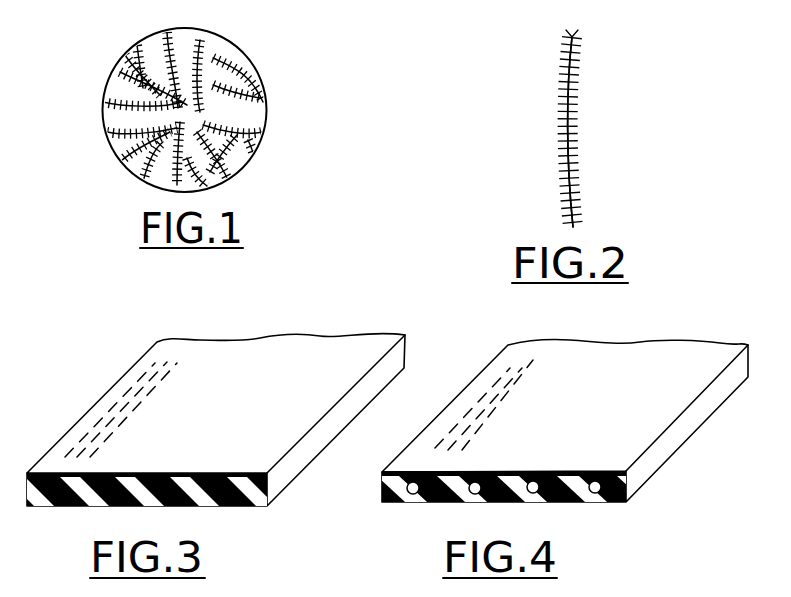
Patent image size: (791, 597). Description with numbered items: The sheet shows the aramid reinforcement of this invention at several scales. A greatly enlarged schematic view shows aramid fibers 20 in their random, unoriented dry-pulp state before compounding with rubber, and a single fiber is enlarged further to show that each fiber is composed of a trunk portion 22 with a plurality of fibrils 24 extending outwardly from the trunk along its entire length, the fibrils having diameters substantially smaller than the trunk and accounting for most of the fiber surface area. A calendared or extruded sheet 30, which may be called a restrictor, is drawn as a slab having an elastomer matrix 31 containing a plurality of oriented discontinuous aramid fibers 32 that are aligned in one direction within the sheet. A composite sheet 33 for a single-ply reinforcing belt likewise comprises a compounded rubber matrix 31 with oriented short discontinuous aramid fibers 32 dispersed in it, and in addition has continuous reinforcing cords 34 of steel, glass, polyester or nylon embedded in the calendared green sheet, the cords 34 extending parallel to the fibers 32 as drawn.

In FIG. 1, the aramid fibers 20 is at (213, 60).
In FIG. 2, the aramid fibers 20 is at (581, 113).
In FIG. 2, the trunk portion 22 is at (563, 40).
In FIG. 2, the fibrils 24 is at (575, 122).
In FIG. 3, the calendared or extruded sheet 30 is at (234, 384).
In FIG. 3, the elastomer matrix 31 is at (388, 368).
In FIG. 4, the elastomer matrix 31 is at (668, 450).
In FIG. 3, the oriented discontinuous aramid fibers 32 is at (176, 370).
In FIG. 4, the oriented discontinuous aramid fibers 32 is at (534, 372).
In FIG. 4, the composite sheet 33 is at (562, 414).
In FIG. 4, the reinforcing cords 34 is at (475, 494).